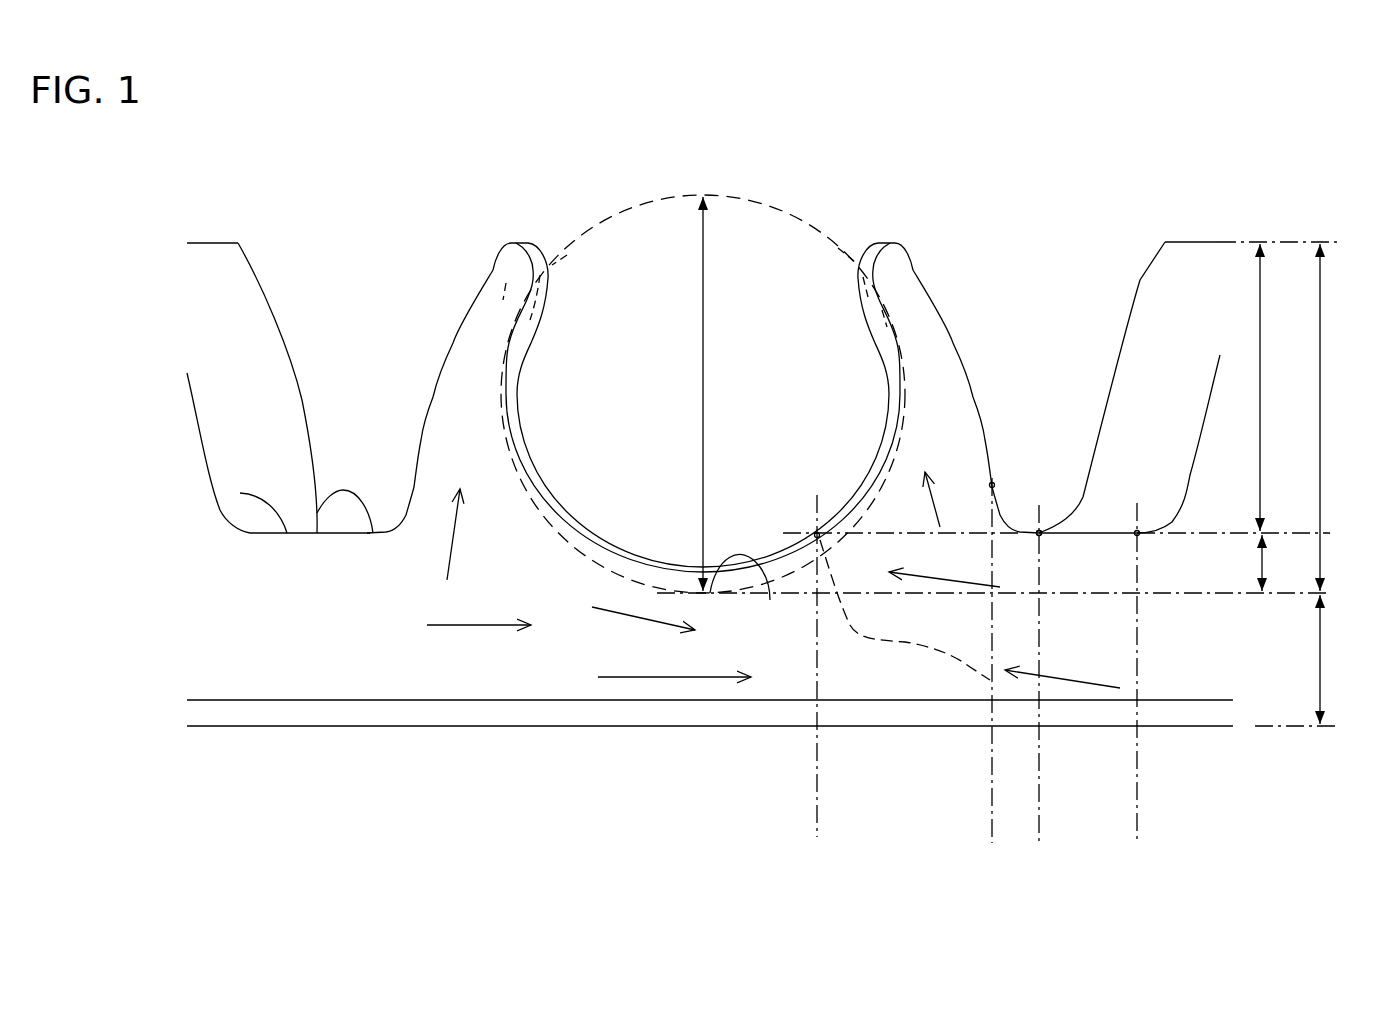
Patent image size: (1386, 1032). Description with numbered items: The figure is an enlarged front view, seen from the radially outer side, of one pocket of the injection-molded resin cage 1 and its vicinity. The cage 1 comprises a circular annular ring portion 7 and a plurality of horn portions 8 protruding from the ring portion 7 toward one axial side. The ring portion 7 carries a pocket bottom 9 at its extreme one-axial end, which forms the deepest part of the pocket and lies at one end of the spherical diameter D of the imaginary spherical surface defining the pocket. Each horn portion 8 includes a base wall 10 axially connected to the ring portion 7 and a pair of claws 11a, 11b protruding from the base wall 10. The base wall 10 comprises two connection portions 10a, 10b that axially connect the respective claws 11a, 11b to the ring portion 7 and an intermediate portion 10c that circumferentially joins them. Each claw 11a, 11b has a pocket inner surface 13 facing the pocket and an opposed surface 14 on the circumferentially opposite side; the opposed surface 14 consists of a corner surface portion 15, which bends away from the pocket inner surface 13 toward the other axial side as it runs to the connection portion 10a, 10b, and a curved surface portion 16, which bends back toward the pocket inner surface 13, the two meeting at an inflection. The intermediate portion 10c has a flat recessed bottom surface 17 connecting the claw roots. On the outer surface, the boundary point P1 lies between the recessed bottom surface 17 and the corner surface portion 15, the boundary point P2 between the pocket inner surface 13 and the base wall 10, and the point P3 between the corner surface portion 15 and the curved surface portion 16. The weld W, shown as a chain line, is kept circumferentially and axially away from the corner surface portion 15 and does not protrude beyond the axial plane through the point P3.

The cage 1 is at (322, 184).
The ring portion 7 is at (580, 653).
The horn portion 8 is at (1133, 268).
The pocket bottom 9 is at (770, 600).
The base wall 10 is at (403, 555).
The connection portion 10a is at (907, 560).
The connection portion 10b is at (1190, 575).
The intermediate portion 10c is at (1075, 577).
The claw 11a is at (897, 257).
The claw 11b is at (493, 282).
The pocket inner surface 13 is at (540, 313).
The opposed surface 14 is at (430, 393).
The corner surface portion 15 is at (998, 522).
The curved surface portion 16 is at (243, 340).
The recessed bottom surface 17 is at (377, 537).
The spherical diameter D is at (718, 394).
The weld W is at (930, 648).
The boundary point P1 is at (1039, 533).
The boundary point P2 is at (817, 535).
The point P3 is at (992, 485).